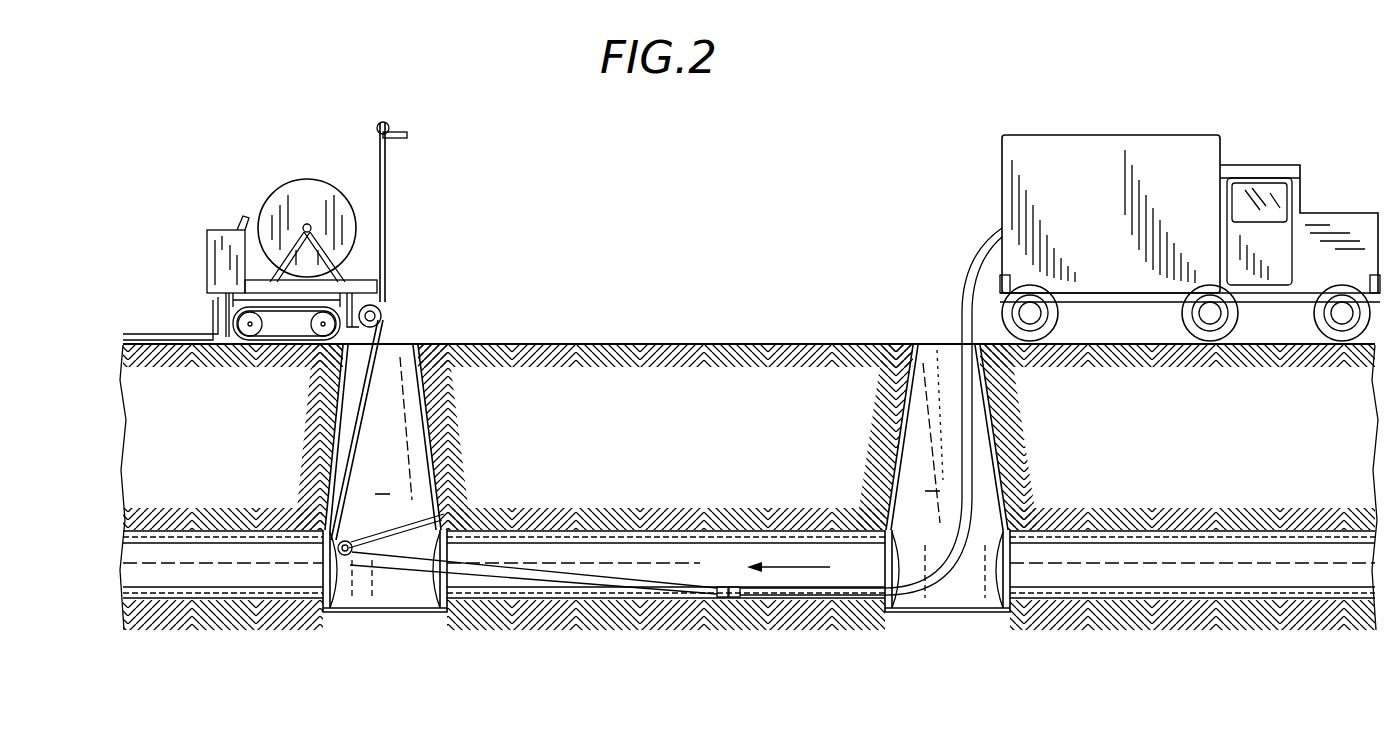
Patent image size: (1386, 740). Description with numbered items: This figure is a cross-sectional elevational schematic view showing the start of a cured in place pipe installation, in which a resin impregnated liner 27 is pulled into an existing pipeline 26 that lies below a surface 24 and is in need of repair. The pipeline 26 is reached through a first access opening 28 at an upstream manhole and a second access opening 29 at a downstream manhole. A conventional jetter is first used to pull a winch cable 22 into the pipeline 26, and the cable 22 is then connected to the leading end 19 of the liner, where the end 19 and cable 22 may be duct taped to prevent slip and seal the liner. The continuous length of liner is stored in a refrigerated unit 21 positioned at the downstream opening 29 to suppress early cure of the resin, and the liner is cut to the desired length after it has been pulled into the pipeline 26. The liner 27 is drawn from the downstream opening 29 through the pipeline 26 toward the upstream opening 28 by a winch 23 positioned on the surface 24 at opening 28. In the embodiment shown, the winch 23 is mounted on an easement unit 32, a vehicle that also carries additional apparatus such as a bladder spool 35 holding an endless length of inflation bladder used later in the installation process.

The leading end 19 is at (752, 598).
The refrigerated unit 21 is at (1097, 213).
The winch cable 22 is at (350, 458).
The winch 23 is at (381, 313).
The surface 24 is at (559, 340).
The existing pipeline 26 is at (595, 523).
The resin impregnated liner 27 is at (960, 525).
The first access opening 28 is at (410, 330).
The second access opening 29 is at (935, 338).
The easement unit 32 is at (191, 245).
The bladder spool 35 is at (288, 188).